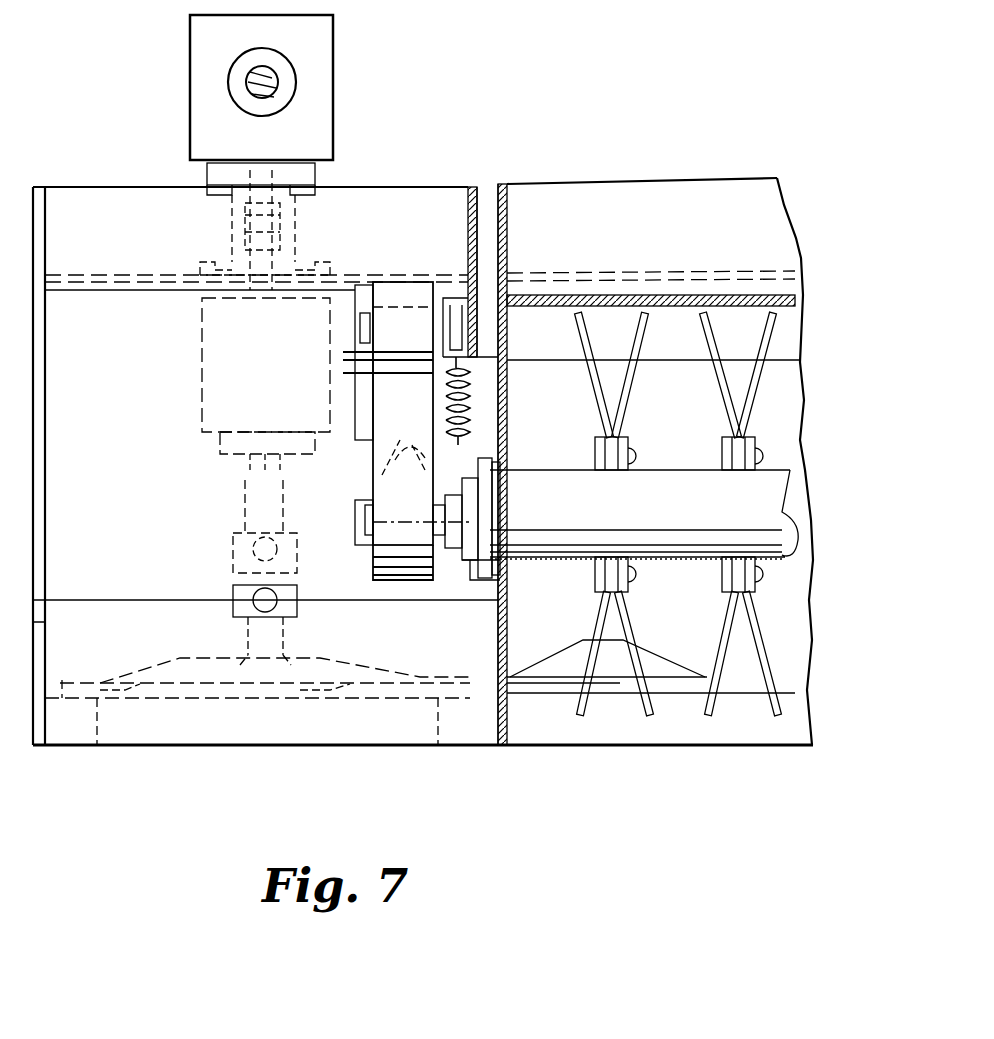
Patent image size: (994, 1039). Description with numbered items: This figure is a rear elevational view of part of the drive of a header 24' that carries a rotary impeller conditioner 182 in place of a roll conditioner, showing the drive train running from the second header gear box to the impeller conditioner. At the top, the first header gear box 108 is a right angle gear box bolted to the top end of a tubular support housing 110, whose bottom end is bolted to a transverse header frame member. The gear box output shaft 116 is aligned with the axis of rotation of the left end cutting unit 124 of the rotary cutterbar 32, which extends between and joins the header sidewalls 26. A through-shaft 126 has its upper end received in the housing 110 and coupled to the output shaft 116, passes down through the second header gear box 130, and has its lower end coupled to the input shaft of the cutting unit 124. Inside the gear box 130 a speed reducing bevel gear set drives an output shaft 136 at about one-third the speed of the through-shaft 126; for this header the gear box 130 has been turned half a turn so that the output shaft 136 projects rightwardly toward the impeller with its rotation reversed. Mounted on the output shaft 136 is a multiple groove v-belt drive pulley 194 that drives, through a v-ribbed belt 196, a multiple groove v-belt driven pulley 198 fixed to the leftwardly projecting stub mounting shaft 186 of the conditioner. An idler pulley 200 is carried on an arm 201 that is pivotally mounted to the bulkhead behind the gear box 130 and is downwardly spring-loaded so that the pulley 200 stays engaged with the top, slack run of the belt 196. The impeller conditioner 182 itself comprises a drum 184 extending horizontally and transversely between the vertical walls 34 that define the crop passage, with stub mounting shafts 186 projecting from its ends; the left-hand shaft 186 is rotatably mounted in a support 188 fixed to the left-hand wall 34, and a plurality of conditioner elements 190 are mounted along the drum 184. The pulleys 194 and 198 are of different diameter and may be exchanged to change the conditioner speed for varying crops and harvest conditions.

The header 24' is at (429, 415).
The sidewall 26 is at (45, 548).
The rotary cutterbar 32 is at (148, 768).
The vertical wall 34 is at (490, 748).
The first header gear box 108 is at (190, 38).
The tubular support housing 110 is at (232, 236).
The output shaft 116 is at (215, 185).
The left end cutting unit 124 is at (168, 663).
The through-shaft 126 is at (243, 472).
The second header gear box 130 is at (202, 358).
The output shaft 136 is at (355, 372).
The rotary impeller conditioner 182 is at (812, 412).
The drum 184 is at (770, 498).
The stub mounting shaft 186 is at (490, 515).
The support 188 is at (482, 580).
The conditioner element 190 is at (765, 648).
The v-belt drive pulley 194 is at (382, 466).
The v-ribbed belt 196 is at (478, 397).
The v-belt driven pulley 198 is at (368, 516).
The idler pulley 200 is at (405, 295).
The arm 201 is at (455, 280).